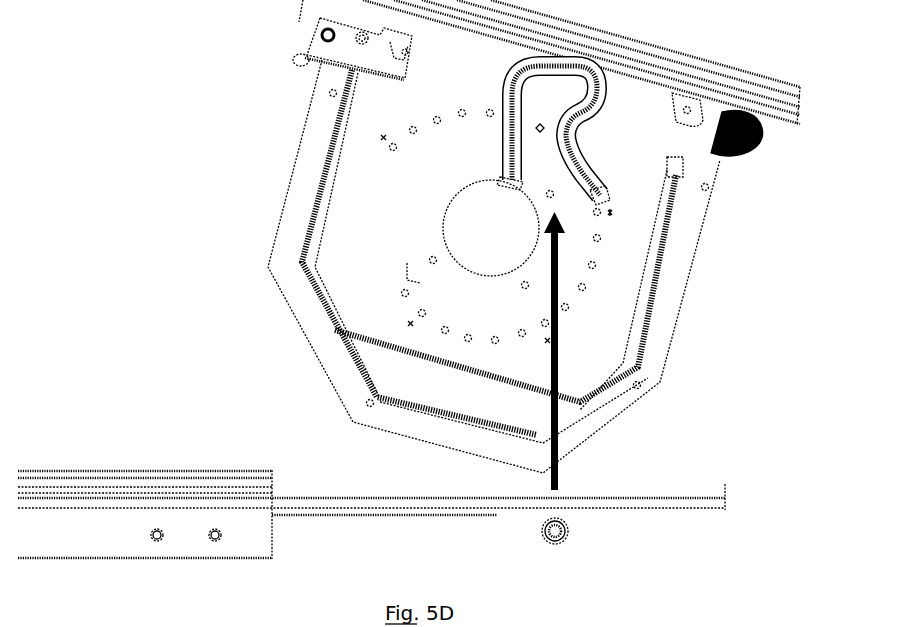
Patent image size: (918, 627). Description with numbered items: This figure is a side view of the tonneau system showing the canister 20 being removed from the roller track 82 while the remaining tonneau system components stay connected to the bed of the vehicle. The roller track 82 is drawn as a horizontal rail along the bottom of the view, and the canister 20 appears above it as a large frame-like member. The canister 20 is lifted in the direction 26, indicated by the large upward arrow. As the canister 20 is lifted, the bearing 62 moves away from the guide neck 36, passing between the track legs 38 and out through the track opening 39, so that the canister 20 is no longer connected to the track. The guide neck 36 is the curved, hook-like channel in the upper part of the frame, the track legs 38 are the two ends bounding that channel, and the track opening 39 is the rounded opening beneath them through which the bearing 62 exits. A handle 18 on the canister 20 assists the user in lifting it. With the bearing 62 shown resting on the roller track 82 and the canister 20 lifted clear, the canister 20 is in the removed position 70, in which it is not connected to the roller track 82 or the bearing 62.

The handle 18 is at (743, 117).
The canister 20 is at (582, 352).
The direction 26 is at (553, 452).
The guide neck 36 is at (615, 157).
The track legs 38 is at (505, 177).
The track opening 39 is at (497, 204).
The bearing 62 is at (485, 523).
The removed position 70 is at (155, 111).
The roller track 82 is at (163, 483).